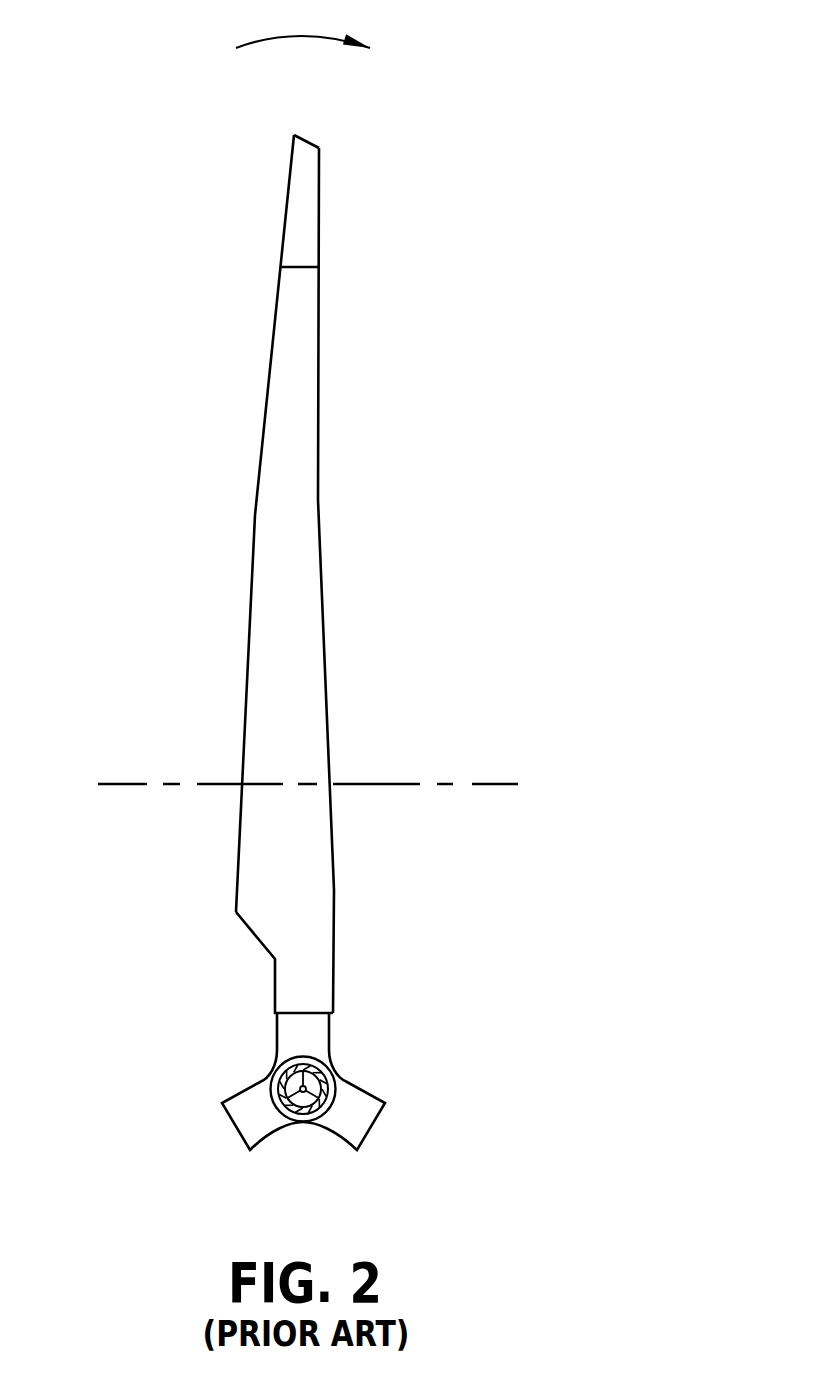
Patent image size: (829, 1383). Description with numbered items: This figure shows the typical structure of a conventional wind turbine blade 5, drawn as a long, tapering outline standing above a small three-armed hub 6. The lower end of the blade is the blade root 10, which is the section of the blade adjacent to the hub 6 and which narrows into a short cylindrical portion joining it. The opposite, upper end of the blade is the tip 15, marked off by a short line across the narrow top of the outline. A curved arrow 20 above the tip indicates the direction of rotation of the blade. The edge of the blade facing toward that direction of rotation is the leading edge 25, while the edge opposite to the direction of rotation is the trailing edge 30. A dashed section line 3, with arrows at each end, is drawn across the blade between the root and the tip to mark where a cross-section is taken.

The section line 3- 3 is at (493, 840).
The wind turbine blade 5 is at (301, 592).
The hub 6 is at (335, 1072).
The blade root 10 is at (305, 962).
The tip 15 is at (303, 218).
The arrow 20 is at (303, 24).
The leading edge 25 is at (318, 508).
The trailing edge 30 is at (254, 512).